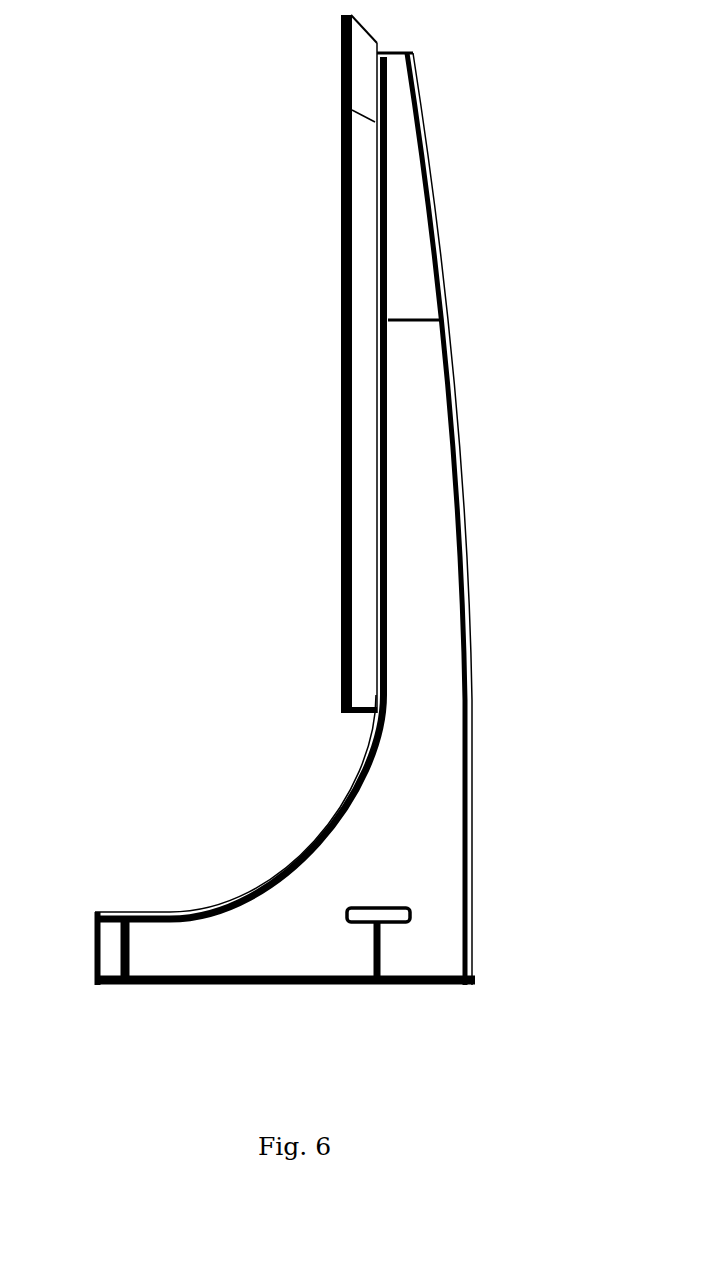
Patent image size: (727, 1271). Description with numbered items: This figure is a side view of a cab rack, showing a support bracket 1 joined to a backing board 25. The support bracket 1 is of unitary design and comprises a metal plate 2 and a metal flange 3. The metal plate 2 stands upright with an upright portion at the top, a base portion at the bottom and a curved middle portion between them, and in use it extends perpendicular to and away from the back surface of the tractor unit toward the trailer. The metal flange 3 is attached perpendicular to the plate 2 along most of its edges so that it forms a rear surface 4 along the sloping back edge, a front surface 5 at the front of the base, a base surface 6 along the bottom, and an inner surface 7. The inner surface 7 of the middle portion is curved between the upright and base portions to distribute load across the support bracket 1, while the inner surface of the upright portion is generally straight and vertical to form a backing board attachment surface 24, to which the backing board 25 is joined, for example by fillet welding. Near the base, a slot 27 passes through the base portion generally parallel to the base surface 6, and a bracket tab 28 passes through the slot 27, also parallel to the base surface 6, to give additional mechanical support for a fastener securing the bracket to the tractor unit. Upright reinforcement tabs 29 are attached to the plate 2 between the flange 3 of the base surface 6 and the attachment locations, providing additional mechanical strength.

The support bracket 1 is at (310, 530).
The metal plate 2 is at (432, 514).
The metal flange 3 is at (472, 575).
The rear surface 4 is at (440, 245).
The front surface 5 is at (93, 950).
The base surface 6 is at (258, 985).
The inner surface 7 is at (352, 787).
The backing board attachment surface 24 is at (380, 424).
The backing board 25 is at (358, 435).
The slot 27 is at (410, 912).
The bracket tab 28 is at (388, 922).
The reinforcement tab 29 is at (137, 985).